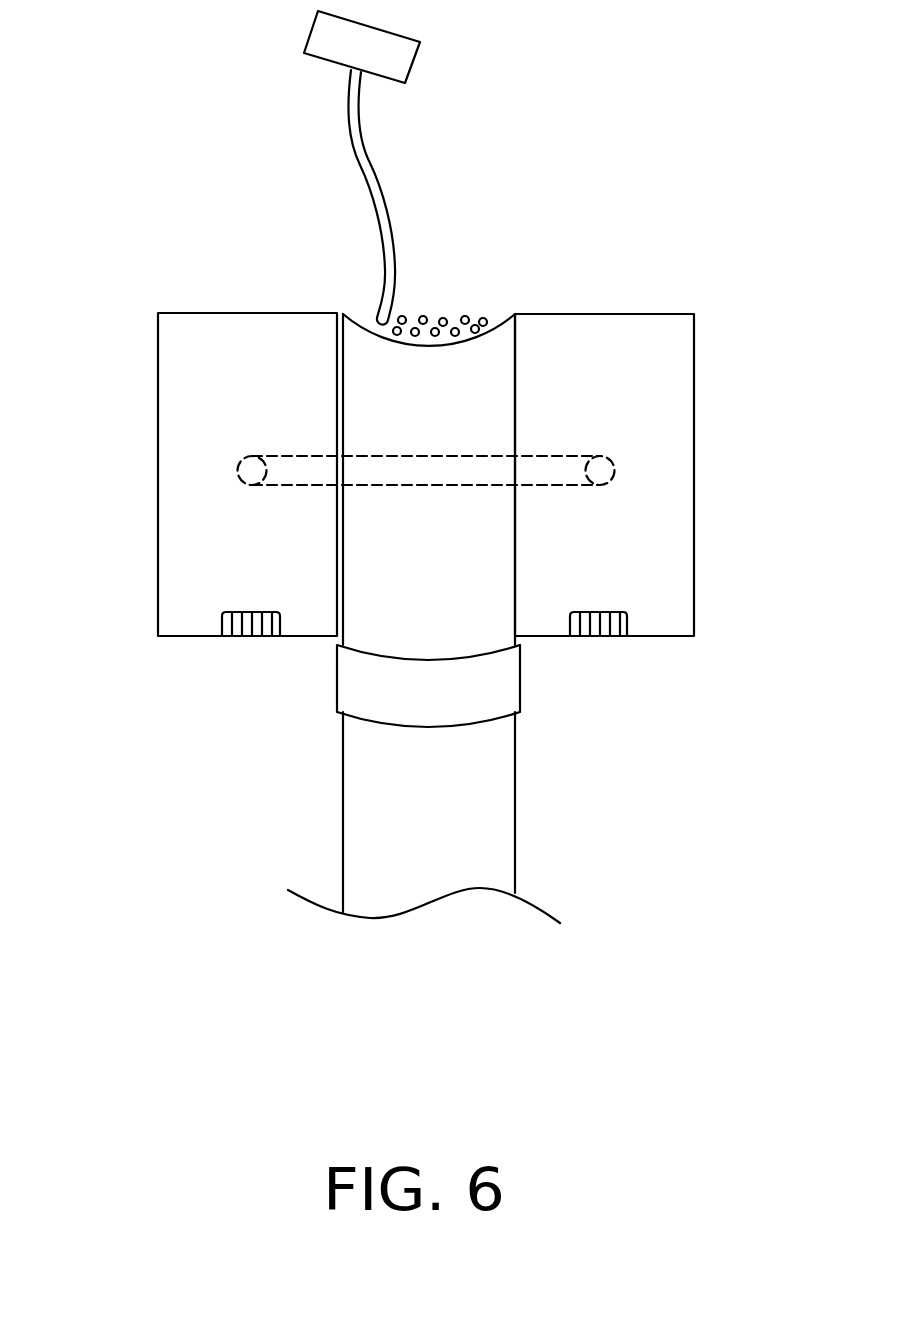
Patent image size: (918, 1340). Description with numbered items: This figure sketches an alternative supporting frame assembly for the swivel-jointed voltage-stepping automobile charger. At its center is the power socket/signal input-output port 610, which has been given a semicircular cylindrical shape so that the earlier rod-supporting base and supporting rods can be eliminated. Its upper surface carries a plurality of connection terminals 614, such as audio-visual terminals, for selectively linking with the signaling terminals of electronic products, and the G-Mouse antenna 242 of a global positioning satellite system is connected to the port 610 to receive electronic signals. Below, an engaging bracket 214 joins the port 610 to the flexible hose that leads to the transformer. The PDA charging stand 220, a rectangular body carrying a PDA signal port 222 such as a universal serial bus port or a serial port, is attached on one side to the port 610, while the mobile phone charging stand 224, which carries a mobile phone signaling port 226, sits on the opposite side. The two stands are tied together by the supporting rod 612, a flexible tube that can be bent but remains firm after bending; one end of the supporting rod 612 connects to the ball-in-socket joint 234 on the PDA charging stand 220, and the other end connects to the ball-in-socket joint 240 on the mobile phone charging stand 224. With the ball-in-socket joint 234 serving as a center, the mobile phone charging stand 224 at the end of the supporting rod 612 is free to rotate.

The power socket/signal input-output port 610 is at (488, 360).
The connection terminal 614 is at (425, 322).
The G-Mouse antenna 242 is at (371, 159).
The mobile phone charging stand 224 is at (246, 332).
The PDA charging stand 220 is at (627, 330).
The mobile phone signaling port 226 is at (223, 622).
The PDA signal port 222 is at (628, 622).
The engaging bracket 214 is at (353, 683).
The supporting rod 612 is at (473, 470).
The ball-in-socket joint 240 is at (250, 470).
The ball-in-socket joint 234 is at (613, 467).